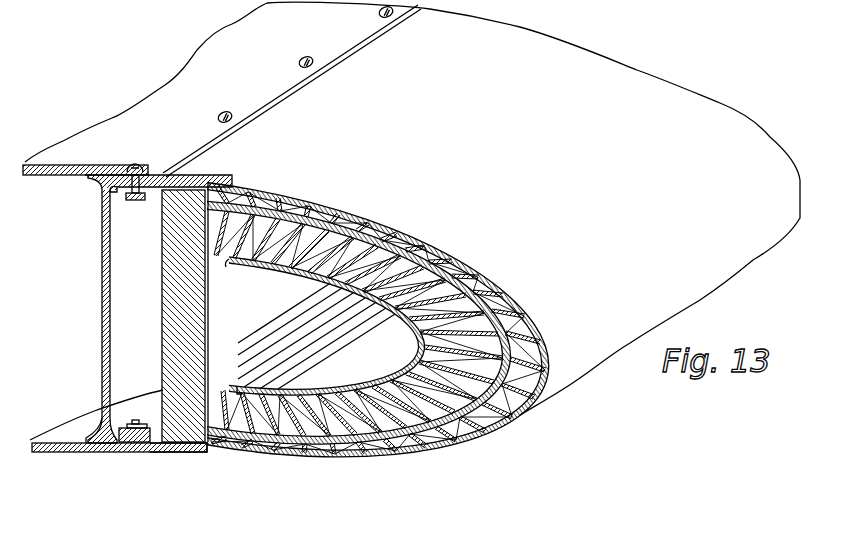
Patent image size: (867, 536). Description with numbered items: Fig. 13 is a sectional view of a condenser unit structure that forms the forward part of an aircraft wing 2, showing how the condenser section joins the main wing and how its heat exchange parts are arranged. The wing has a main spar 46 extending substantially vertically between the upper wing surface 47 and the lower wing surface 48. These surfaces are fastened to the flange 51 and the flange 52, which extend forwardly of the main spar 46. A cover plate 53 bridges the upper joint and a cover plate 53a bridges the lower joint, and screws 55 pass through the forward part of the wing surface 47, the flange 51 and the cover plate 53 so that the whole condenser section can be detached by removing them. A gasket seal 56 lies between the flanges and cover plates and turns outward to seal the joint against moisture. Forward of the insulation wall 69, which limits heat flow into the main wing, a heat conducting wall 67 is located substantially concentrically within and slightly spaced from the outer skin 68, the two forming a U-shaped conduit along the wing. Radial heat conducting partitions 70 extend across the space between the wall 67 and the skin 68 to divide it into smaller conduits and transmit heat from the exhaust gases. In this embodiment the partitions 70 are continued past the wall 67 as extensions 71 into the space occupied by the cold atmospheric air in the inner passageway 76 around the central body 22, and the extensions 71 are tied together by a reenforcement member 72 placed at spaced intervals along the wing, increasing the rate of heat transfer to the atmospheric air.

The aircraft hull assembly 2 is at (182, 55).
The upper wing surface 47 is at (113, 119).
The gasket seal 56 is at (353, 52).
The screws 55 is at (232, 113).
The flange 51 is at (101, 211).
The main spar 46 is at (102, 289).
The flange 52 is at (113, 422).
The cover plate 53 is at (158, 202).
The cover plate 53a is at (154, 428).
The lower wing surface 48 is at (80, 452).
The insulation wall 69 is at (207, 298).
The extensions 71 is at (527, 313).
The outer skin 68 is at (434, 245).
The heat conducting wall 67 is at (374, 227).
The reenforcement member 72 is at (307, 281).
The nozzle cone 22 is at (316, 336).
The radial partitions 70 is at (444, 267).
The passageway 76 is at (400, 440).